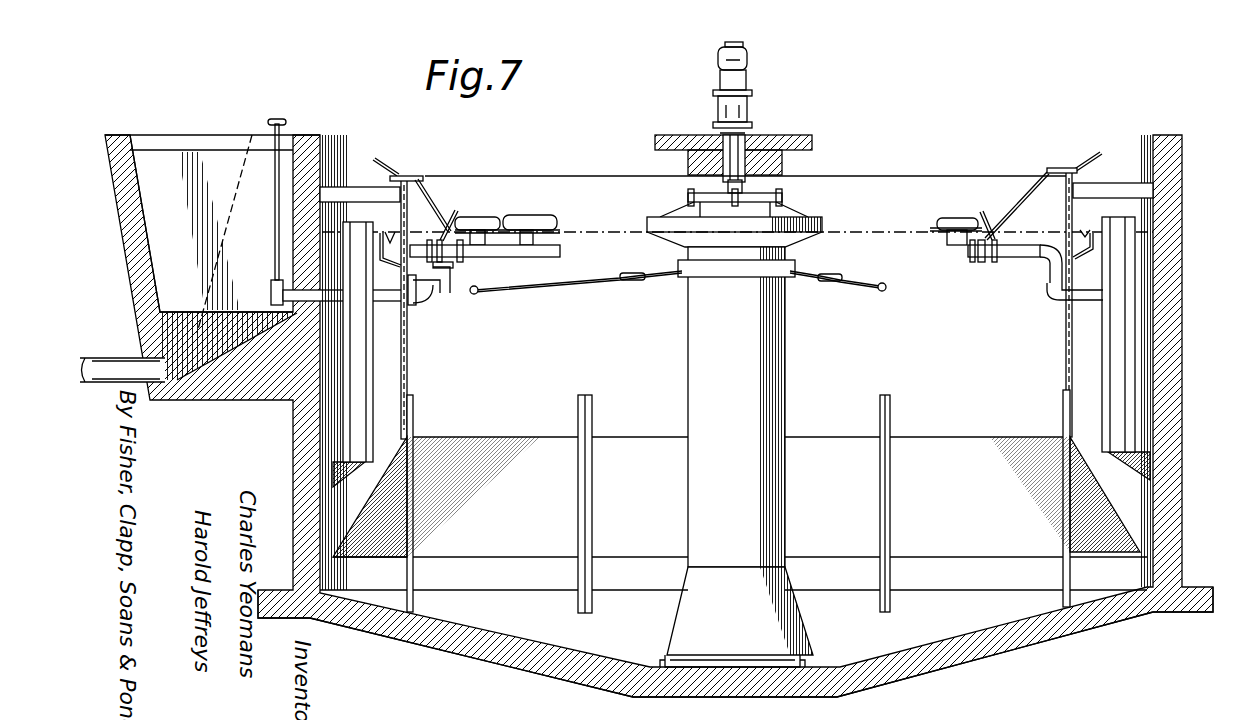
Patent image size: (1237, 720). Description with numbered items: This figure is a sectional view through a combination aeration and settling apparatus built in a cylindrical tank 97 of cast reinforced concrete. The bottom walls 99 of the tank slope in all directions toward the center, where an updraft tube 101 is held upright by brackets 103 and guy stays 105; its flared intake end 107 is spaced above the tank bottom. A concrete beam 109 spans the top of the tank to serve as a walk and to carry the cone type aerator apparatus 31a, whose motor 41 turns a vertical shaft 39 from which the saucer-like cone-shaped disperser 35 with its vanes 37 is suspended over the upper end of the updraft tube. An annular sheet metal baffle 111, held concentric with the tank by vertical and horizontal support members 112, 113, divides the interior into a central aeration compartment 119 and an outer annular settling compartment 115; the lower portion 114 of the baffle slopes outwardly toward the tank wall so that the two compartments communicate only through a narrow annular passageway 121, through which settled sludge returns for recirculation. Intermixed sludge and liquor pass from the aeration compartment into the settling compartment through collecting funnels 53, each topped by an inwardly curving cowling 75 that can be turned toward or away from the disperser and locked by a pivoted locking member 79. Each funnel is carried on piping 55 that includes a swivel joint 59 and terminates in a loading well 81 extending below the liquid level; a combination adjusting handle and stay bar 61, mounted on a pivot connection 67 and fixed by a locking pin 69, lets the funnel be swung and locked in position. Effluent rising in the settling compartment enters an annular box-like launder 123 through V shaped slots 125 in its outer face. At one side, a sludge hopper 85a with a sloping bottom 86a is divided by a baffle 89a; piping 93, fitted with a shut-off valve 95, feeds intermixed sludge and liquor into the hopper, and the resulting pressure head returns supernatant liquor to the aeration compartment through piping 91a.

The motor 41 is at (748, 64).
The concrete beam 109 is at (775, 133).
The vertical shaft 39 is at (782, 162).
The vanes 37 is at (690, 208).
The cone type aerator apparatus 31a is at (832, 207).
The cone-shaped disperser 35 is at (822, 228).
The horizontal support member 113 is at (350, 190).
The locking pin 69 is at (400, 175).
The pivot connection 67 is at (420, 176).
The combination adjusting handle and stay bar 61 is at (433, 195).
The pivoted locking member 79 is at (450, 215).
The cowling 75 is at (510, 216).
The collecting funnel 53 is at (545, 235).
The piping 55 is at (500, 258).
The swivel joint 59 is at (452, 282).
The piping 91a is at (435, 298).
The piping 93 is at (395, 305).
The guy stays 105 is at (565, 285).
The aeration compartment 119 is at (645, 341).
The updraft tube 101 is at (786, 353).
The loading well 81 is at (345, 415).
The annular baffle 111 is at (402, 375).
The cylindrical tank 97 is at (292, 442).
The settling compartment 115 is at (358, 502).
The lower portion of baffle 114 is at (340, 525).
The annular passageway 121 is at (300, 567).
The vertical support member 112 is at (414, 580).
The flared intake end 107 is at (800, 620).
The brackets 103 is at (665, 660).
The bottom walls 99 is at (580, 655).
The baffle 89a is at (172, 165).
The sludge hopper 85a is at (228, 150).
The sloping bottom 86a is at (240, 352).
The valve 95 is at (270, 292).
The launder 123 is at (379, 240).
The V shaped slots 125 is at (391, 242).